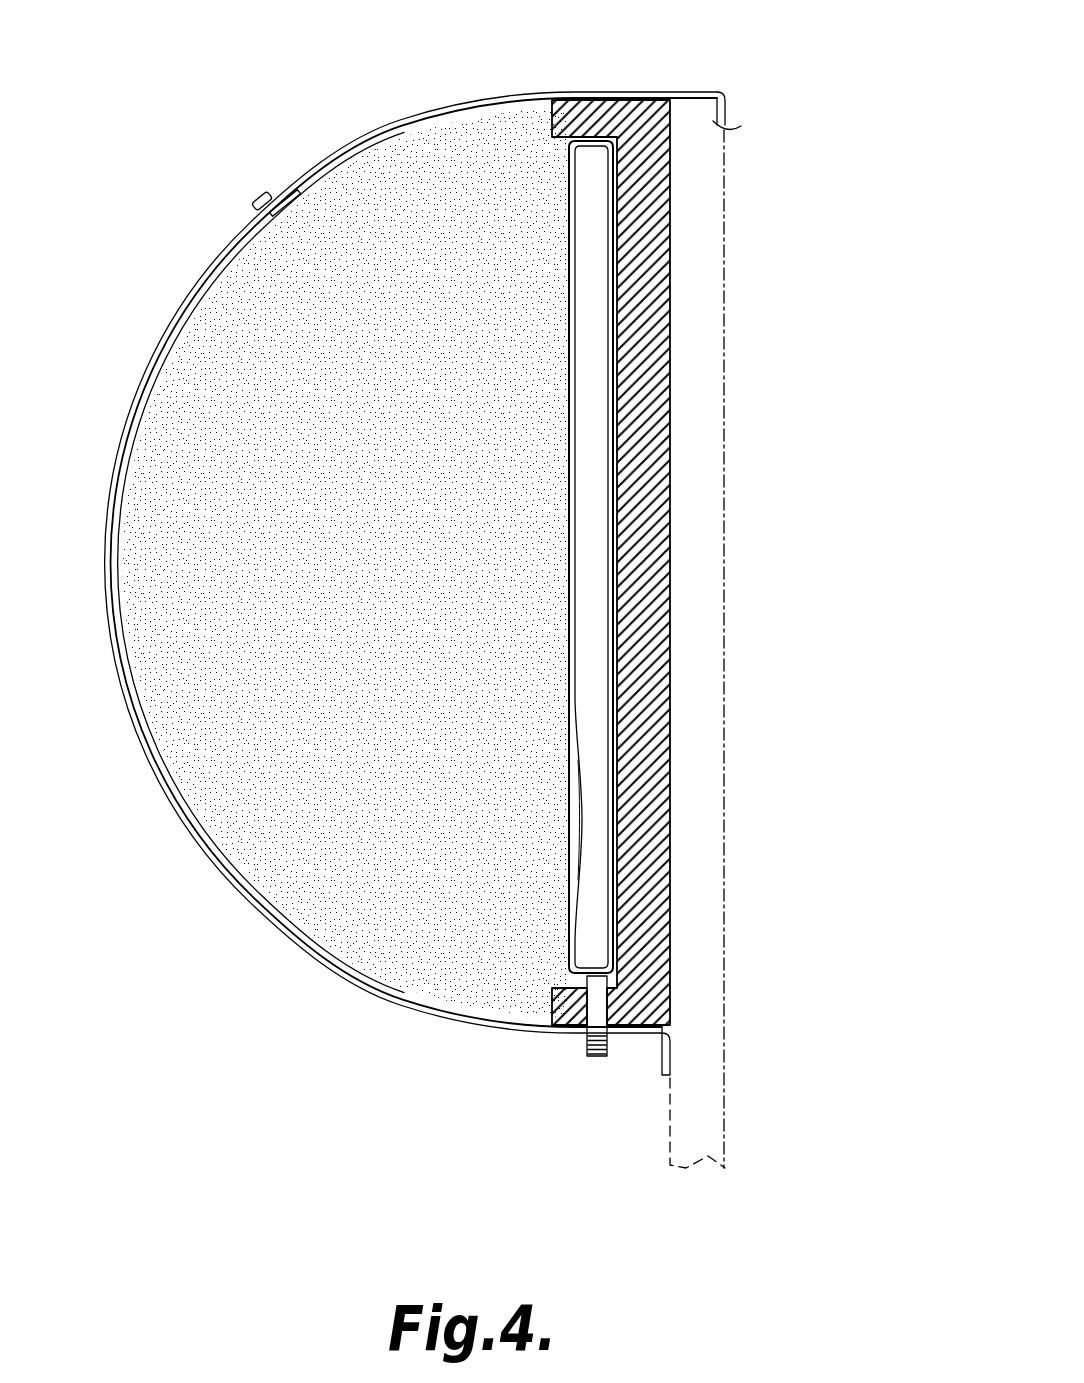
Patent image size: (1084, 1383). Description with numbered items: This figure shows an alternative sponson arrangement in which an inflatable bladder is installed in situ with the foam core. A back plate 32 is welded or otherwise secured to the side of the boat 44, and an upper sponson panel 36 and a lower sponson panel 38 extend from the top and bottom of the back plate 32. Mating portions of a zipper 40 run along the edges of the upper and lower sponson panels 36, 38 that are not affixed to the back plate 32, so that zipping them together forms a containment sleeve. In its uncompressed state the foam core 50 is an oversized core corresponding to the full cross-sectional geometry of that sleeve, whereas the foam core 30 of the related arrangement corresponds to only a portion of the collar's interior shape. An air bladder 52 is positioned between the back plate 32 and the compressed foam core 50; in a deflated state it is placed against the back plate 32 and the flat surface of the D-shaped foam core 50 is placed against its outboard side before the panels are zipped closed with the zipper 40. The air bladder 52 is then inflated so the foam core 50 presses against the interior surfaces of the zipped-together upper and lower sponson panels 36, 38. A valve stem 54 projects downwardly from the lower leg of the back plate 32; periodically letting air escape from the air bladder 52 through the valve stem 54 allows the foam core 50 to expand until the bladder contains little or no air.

The foam core 30 is at (355, 177).
The back plate 32 is at (646, 117).
The upper sponson panel 36 is at (457, 103).
The lower sponson panel 38 is at (308, 945).
The zipper 40 is at (268, 194).
The side of the boat 44 is at (740, 125).
The foam core 50 is at (532, 998).
The air bladder 52 is at (583, 370).
The valve stem 54 is at (582, 1054).